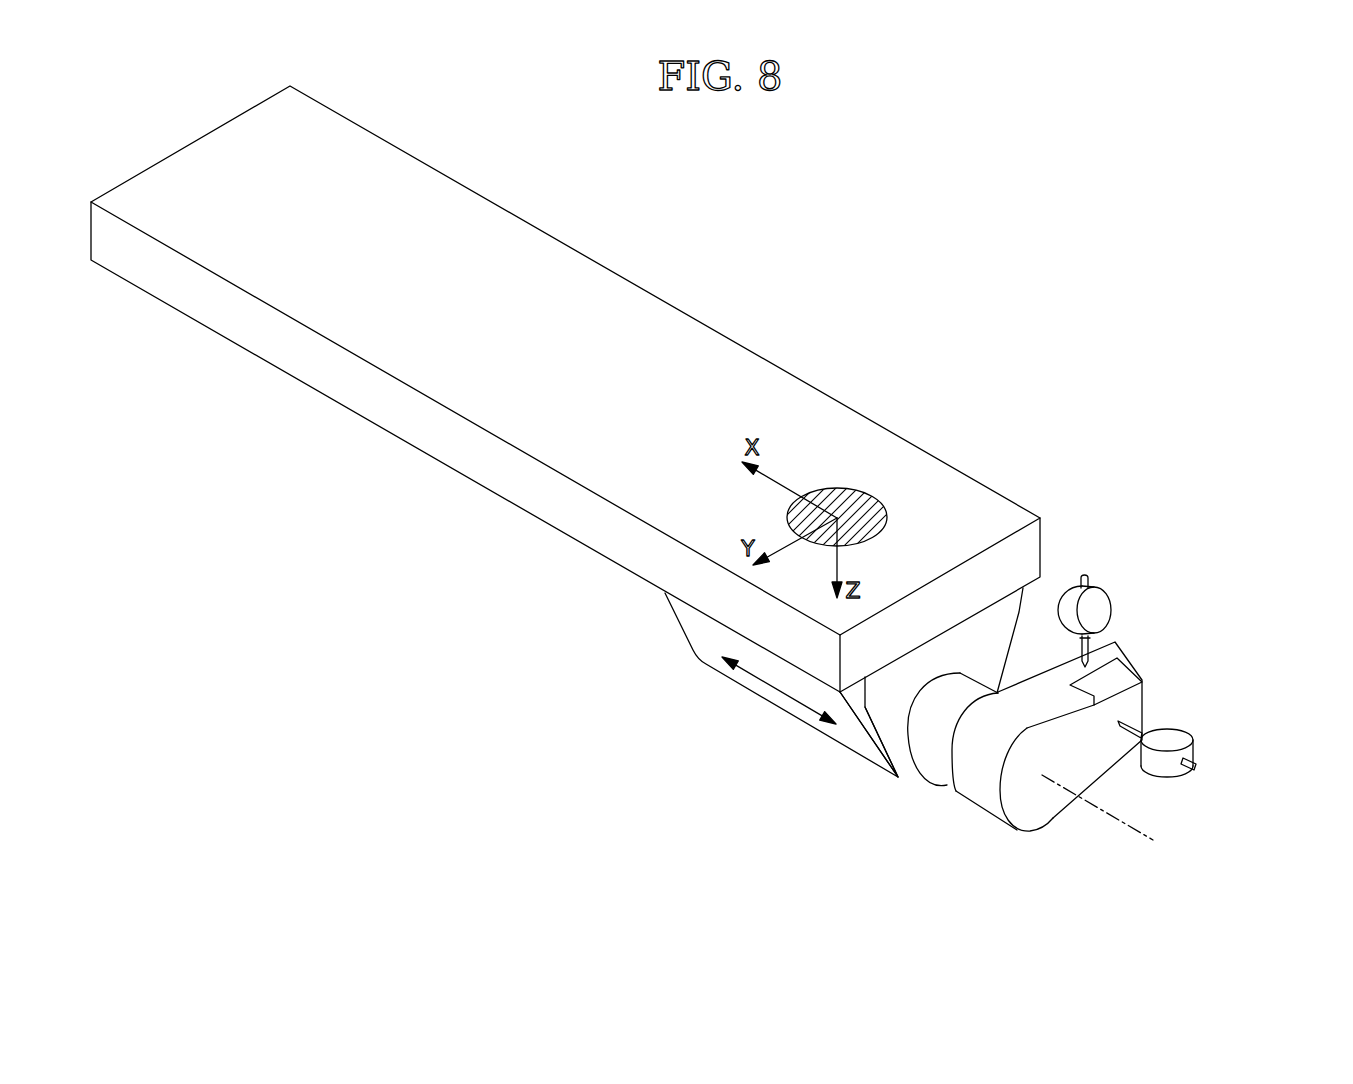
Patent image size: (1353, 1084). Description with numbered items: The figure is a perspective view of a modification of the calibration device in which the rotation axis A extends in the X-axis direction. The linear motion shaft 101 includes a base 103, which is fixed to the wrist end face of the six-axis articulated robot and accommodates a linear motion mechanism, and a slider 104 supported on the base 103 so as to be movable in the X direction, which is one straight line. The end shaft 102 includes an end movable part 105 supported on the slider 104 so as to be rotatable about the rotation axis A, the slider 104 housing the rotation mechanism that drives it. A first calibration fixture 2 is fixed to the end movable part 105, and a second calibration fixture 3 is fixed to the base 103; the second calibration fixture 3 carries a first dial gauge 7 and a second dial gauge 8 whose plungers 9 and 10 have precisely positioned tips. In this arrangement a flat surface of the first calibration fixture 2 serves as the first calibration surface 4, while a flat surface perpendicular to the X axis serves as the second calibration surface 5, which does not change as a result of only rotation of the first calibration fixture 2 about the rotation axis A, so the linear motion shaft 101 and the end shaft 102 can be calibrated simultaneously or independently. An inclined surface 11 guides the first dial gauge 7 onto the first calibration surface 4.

The linear motion shaft 101 is at (657, 279).
The base 103 is at (498, 265).
The slider 104 is at (698, 635).
The end shaft 102 is at (884, 783).
The end movable part 105 is at (945, 752).
The first calibration surface 4 is at (1043, 694).
The second calibration surface 5 is at (1035, 800).
The inclined surface 11 is at (1118, 680).
The first dial gauge 7 is at (1094, 608).
The plunger 9 is at (1092, 642).
The second dial gauge 8 is at (1175, 740).
The plunger 10 is at (1118, 728).
The second calibration fixture 3 is at (1238, 758).
The first calibration fixture 2 is at (1033, 854).
The rotation axis A is at (1133, 832).